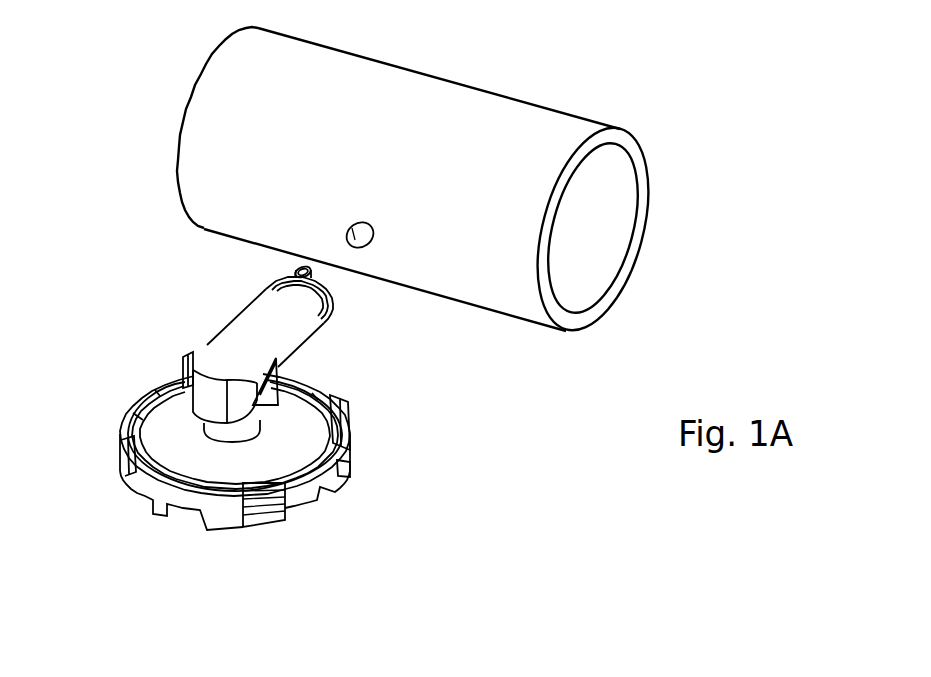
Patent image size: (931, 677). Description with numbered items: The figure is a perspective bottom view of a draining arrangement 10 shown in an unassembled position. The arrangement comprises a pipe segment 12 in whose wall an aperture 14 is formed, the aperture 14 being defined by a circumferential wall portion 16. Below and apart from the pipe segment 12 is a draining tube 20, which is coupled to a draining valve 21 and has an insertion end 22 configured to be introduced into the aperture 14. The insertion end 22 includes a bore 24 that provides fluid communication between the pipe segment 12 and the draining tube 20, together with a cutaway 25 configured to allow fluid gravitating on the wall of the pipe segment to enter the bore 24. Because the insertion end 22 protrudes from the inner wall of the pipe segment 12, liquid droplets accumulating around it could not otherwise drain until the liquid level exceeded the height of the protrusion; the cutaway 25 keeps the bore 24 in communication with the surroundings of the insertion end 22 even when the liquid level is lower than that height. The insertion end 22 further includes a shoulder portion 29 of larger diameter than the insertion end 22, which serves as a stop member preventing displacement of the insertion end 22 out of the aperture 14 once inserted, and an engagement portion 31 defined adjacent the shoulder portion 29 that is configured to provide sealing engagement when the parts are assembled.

The draining arrangement 10 is at (674, 129).
The pipe segment 12 is at (337, 62).
The aperture 14 is at (346, 227).
The circumferential wall portion 16 is at (355, 240).
The draining tube 20 is at (237, 345).
The draining valve 21 is at (343, 440).
The insertion end 22 is at (307, 270).
The bore 24 is at (322, 276).
The cutaway 25 is at (315, 267).
The shoulder portion 29 is at (270, 383).
The engagement portion 31 is at (265, 297).